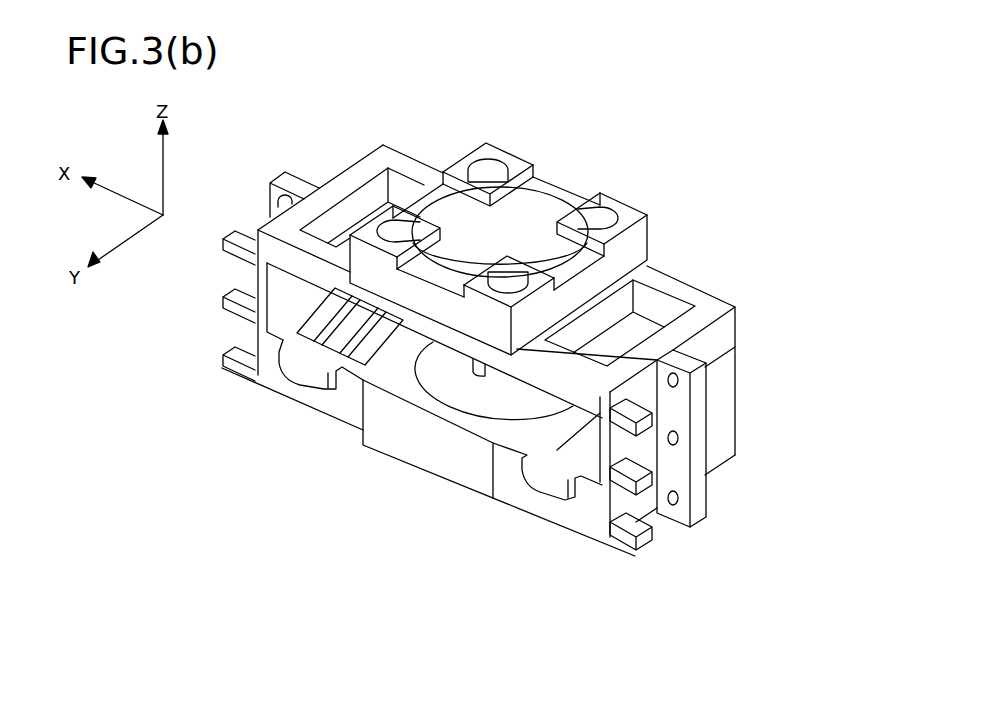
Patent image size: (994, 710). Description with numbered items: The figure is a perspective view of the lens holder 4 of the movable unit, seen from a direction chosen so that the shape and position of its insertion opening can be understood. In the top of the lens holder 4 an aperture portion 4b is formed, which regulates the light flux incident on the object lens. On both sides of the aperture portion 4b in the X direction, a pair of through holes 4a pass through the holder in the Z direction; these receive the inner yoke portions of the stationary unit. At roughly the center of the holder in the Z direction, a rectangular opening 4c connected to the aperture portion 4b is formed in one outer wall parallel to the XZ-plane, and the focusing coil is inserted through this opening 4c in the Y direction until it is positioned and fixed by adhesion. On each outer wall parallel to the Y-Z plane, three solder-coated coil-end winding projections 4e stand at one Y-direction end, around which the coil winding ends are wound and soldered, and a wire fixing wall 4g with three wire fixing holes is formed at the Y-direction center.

The lens holder 4 is at (357, 174).
The through holes 4a is at (410, 196).
The aperture portion 4b is at (532, 252).
The opening 4c is at (283, 300).
The coil-end winding projections 4e is at (648, 427).
The wire fixing wall 4g is at (697, 390).